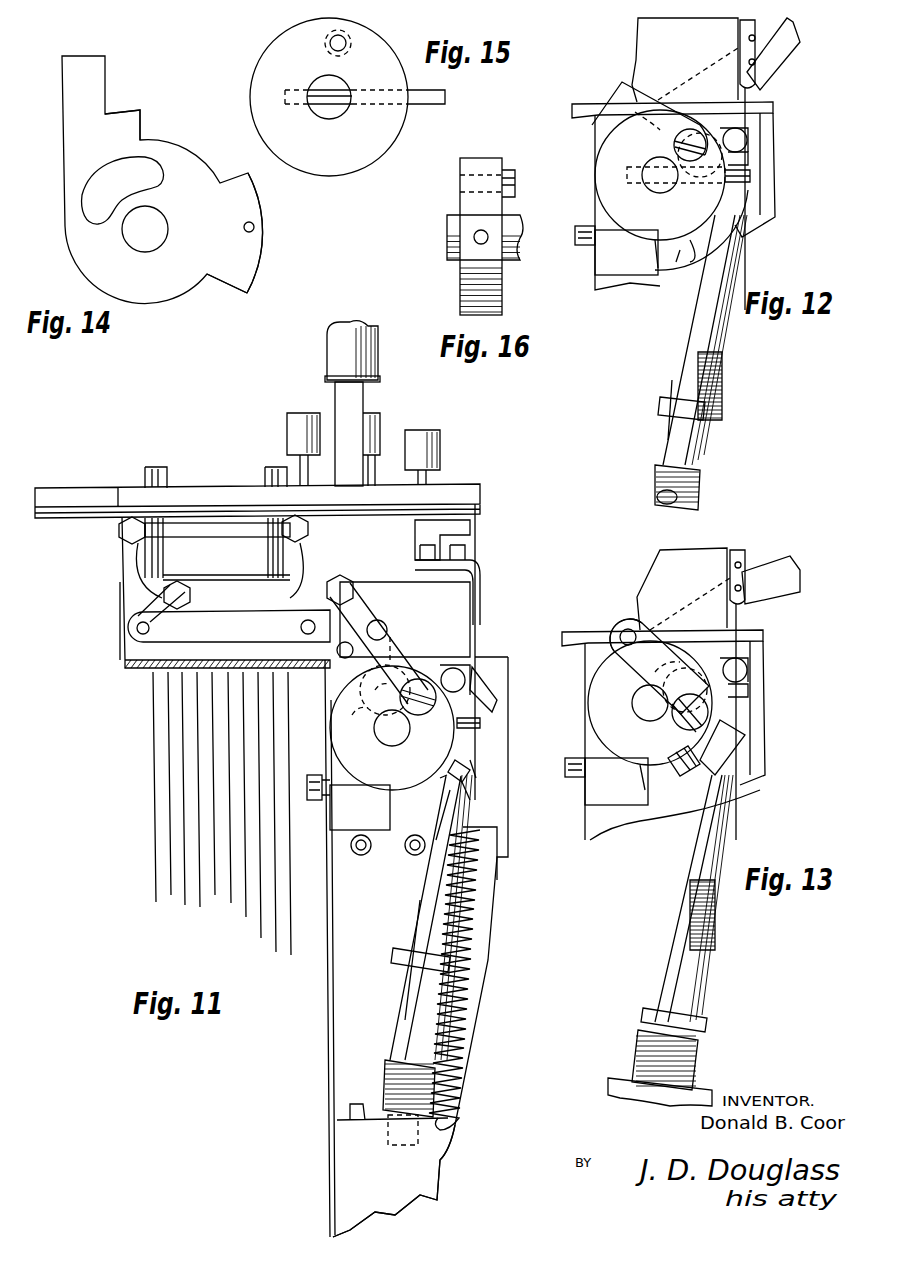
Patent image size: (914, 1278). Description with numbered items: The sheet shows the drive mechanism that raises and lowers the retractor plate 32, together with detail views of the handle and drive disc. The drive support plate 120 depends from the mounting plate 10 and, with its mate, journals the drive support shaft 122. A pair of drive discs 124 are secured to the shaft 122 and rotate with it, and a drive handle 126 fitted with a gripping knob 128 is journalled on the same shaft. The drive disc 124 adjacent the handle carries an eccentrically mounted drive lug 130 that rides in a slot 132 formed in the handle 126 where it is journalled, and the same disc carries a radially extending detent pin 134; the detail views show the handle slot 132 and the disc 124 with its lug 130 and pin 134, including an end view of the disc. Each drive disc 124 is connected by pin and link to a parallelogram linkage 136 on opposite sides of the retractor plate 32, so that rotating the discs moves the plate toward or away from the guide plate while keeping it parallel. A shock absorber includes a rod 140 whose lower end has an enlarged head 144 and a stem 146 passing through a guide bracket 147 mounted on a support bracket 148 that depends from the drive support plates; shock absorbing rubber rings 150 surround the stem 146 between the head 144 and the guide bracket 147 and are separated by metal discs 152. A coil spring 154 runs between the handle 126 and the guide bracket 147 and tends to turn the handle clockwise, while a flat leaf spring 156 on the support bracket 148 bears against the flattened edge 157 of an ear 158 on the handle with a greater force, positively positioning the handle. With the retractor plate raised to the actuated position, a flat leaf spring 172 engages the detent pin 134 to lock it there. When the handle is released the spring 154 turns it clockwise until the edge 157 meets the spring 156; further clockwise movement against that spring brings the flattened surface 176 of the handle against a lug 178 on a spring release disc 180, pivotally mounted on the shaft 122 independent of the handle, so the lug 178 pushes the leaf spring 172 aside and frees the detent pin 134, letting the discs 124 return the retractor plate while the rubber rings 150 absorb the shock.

In FIG. 12, the mounting plate 10 is at (770, 103).
In FIG. 13, the mounting plate 10 is at (755, 637).
In FIG. 11, the mounting plate 10 is at (495, 663).
In FIG. 11, the retractor plate 32 is at (238, 536).
In FIG. 12, the drive support plate 120 is at (760, 223).
In FIG. 13, the drive support plate 120 is at (756, 787).
In FIG. 11, the drive support plate 120 is at (500, 746).
In FIG. 12, the drive support shaft 122 is at (665, 189).
In FIG. 13, the drive support shaft 122 is at (650, 709).
In FIG. 11, the drive support shaft 122 is at (392, 743).
In FIG. 15, the drive disc 124 is at (349, 179).
In FIG. 16, the drive disc 124 is at (458, 290).
In FIG. 12, the drive disc 124 is at (608, 192).
In FIG. 13, the drive disc 124 is at (650, 703).
In FIG. 11, the drive disc 124 is at (340, 758).
In FIG. 14, the drive handle 126 is at (157, 312).
In FIG. 11, the drive handle 126 is at (362, 406).
In FIG. 11, the gripping knob 128 is at (332, 361).
In FIG. 15, the drive lug 130 is at (345, 38).
In FIG. 16, the drive lug 130 is at (505, 176).
In FIG. 12, the drive lug 130 is at (672, 148).
In FIG. 13, the drive lug 130 is at (718, 676).
In FIG. 11, the drive lug 130 is at (400, 687).
In FIG. 14, the slot 132 is at (86, 201).
In FIG. 12, the slot 132 is at (648, 125).
In FIG. 13, the slot 132 is at (640, 679).
In FIG. 11, the slot 132 is at (360, 719).
In FIG. 15, the detent pin 134 is at (432, 98).
In FIG. 16, the detent pin 134 is at (480, 233).
In FIG. 12, the detent pin 134 is at (755, 179).
In FIG. 13, the detent pin 134 is at (675, 815).
In FIG. 11, the detent pin 134 is at (484, 721).
In FIG. 11, the parallelogram linkage 136 is at (116, 565).
In FIG. 12, the rod 140 is at (692, 329).
In FIG. 13, the rod 140 is at (688, 880).
In FIG. 11, the rod 140 is at (420, 889).
In FIG. 12, the enlarged head 144 is at (660, 407).
In FIG. 13, the enlarged head 144 is at (648, 1018).
In FIG. 11, the enlarged head 144 is at (393, 958).
In FIG. 12, the stem 146 is at (676, 437).
In FIG. 11, the stem 146 is at (405, 1024).
In FIG. 13, the guide bracket 147 is at (640, 1097).
In FIG. 11, the guide bracket 147 is at (378, 1213).
In FIG. 11, the support bracket 148 is at (328, 1171).
In FIG. 12, the shock absorbing rubber rings 150 is at (698, 477).
In FIG. 11, the shock absorbing rubber rings 150 is at (375, 1106).
In FIG. 12, the metal discs 152 is at (655, 496).
In FIG. 13, the metal discs 152 is at (645, 1053).
In FIG. 12, the coil spring 154 is at (722, 386).
In FIG. 13, the coil spring 154 is at (712, 938).
In FIG. 11, the coil spring 154 is at (462, 1006).
In FIG. 12, the flat leaf spring 156 is at (655, 257).
In FIG. 13, the flat leaf spring 156 is at (645, 799).
In FIG. 11, the flat leaf spring 156 is at (388, 814).
In FIG. 14, the flattened edge 157 is at (228, 292).
In FIG. 12, the flattened edge 157 is at (670, 271).
In FIG. 13, the flattened edge 157 is at (646, 779).
In FIG. 11, the flattened edge 157 is at (445, 781).
In FIG. 14, the ear 158 is at (252, 256).
In FIG. 12, the ear 158 is at (683, 265).
In FIG. 13, the ear 158 is at (670, 767).
In FIG. 11, the ear 158 is at (466, 765).
In FIG. 13, the flat leaf spring 172 is at (746, 725).
In FIG. 11, the flat leaf spring 172 is at (472, 780).
In FIG. 14, the flattened surface 176 is at (142, 129).
In FIG. 13, the flattened surface 176 is at (730, 649).
In FIG. 12, the lug 178 is at (750, 143).
In FIG. 13, the lug 178 is at (750, 683).
In FIG. 11, the lug 178 is at (455, 680).
In FIG. 12, the spring release disc 180 is at (752, 163).
In FIG. 13, the spring release disc 180 is at (742, 705).